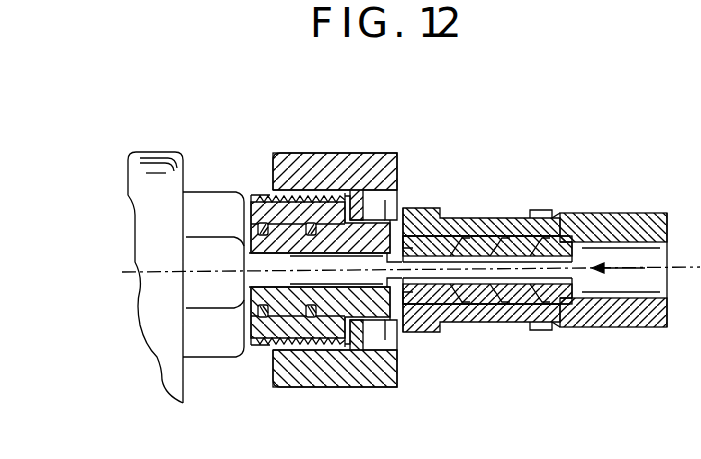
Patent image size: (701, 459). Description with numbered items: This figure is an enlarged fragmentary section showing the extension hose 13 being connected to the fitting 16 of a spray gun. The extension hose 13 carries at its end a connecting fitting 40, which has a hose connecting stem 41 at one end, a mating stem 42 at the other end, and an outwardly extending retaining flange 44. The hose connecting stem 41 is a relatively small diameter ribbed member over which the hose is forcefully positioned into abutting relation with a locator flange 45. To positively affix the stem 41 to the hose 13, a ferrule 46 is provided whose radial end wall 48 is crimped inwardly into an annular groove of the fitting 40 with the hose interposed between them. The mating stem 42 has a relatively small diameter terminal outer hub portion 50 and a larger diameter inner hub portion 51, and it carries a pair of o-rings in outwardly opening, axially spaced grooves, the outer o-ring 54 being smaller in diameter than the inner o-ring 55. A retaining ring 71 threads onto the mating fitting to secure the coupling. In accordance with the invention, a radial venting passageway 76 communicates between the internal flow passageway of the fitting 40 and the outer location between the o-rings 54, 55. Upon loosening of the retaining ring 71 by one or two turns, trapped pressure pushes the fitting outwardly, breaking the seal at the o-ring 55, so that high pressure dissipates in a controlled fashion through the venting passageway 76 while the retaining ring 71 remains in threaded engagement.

The extension hose 13 is at (643, 212).
The fitting 16 is at (159, 149).
The connecting fitting 40 is at (403, 207).
The hose connecting stem 41 is at (565, 328).
The mating stem 42 is at (393, 158).
The retaining flange 44 is at (353, 377).
The locator flange 45 is at (436, 326).
The ferrule 46 is at (503, 330).
The radial end wall 48 is at (404, 322).
The terminal outer hub portion 50 is at (256, 192).
The inner hub portion 51 is at (300, 378).
The outer o-ring 54 is at (266, 388).
The inner o-ring 55 is at (291, 386).
The retaining ring 71 is at (397, 380).
The radial venting passageway 76 is at (305, 265).